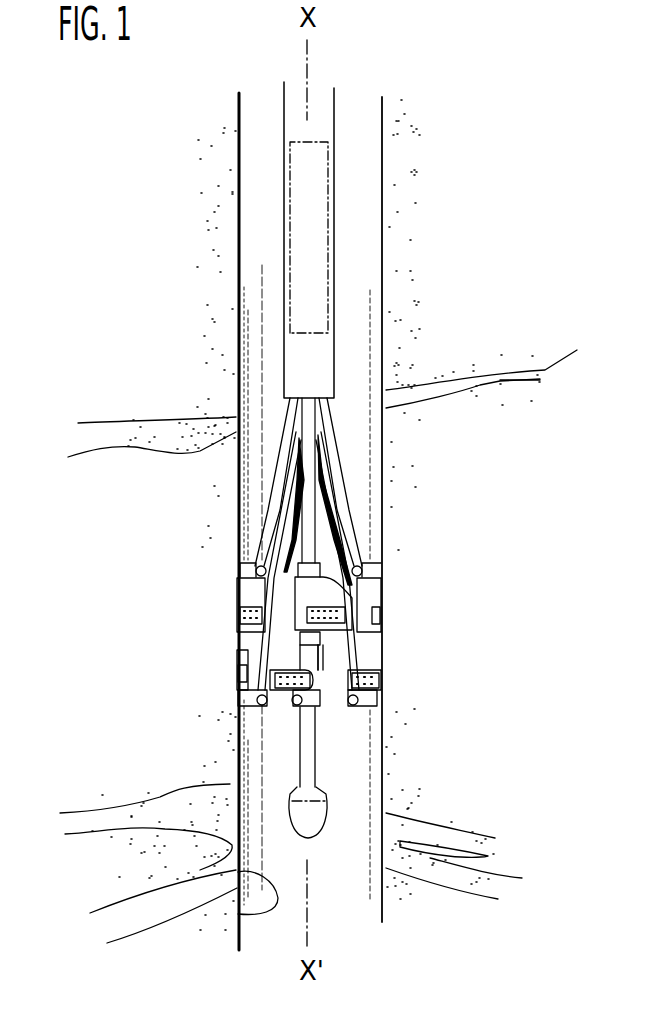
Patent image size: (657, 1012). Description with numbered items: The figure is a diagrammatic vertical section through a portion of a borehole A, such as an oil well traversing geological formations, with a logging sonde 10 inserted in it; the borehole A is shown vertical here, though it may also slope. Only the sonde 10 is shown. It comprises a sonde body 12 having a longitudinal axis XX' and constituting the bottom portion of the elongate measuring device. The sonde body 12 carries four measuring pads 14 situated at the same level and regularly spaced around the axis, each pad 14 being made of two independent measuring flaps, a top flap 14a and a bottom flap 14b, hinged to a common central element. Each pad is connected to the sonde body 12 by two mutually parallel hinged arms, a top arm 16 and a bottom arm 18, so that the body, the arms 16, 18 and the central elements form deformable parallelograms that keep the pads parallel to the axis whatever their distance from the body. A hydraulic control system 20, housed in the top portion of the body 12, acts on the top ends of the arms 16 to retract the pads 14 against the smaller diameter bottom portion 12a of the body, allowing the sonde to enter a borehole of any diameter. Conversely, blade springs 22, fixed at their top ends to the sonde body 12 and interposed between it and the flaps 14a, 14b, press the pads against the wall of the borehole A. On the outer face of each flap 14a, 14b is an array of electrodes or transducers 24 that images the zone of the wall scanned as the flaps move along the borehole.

The sonde 10 is at (337, 322).
The sonde body 12 is at (288, 357).
The smaller diameter bottom portion 12a is at (318, 768).
The measuring pads 14 is at (127, 668).
The top flap 14a is at (236, 605).
The bottom flap 14b is at (237, 660).
The top arm 16 is at (318, 512).
The bottom arm 18 is at (262, 722).
The hydraulic control system 20 is at (292, 188).
The blade springs 22 is at (288, 514).
The electrodes or transducers 24 is at (360, 692).
The borehole A is at (240, 877).